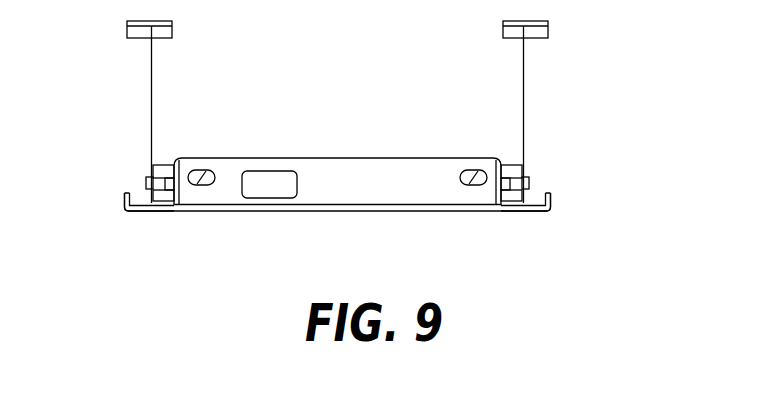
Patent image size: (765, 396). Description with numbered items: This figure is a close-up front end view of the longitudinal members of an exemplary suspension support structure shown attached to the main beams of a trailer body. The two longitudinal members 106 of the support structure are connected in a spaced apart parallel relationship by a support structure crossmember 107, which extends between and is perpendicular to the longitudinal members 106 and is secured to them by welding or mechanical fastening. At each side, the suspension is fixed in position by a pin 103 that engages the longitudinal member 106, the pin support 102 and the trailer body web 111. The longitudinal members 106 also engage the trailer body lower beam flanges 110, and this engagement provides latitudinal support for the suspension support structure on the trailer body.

The pin support 102 is at (168, 152).
The pin 103 is at (143, 168).
The longitudinal member 106 is at (141, 218).
The support structure crossmember 107 is at (306, 150).
The trailer body lower beam flange 110 is at (515, 220).
The trailer body web 111 is at (158, 65).